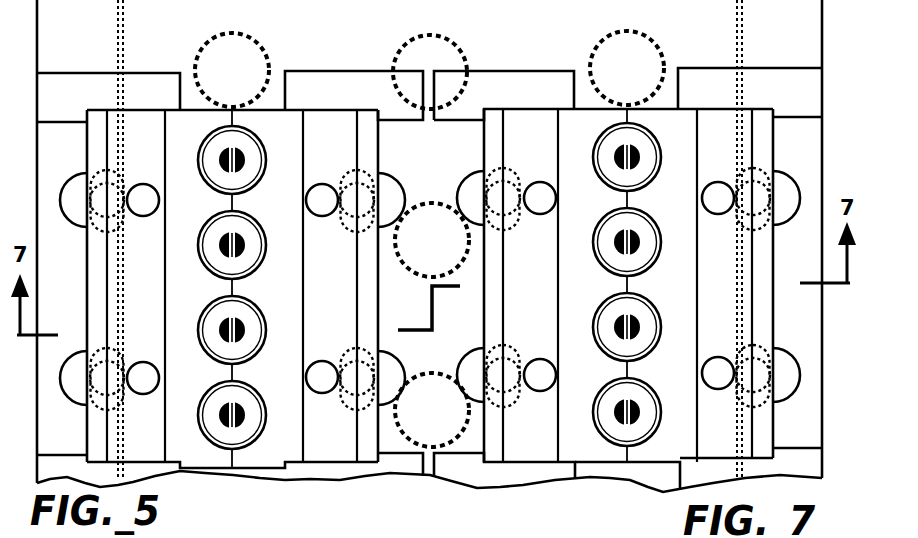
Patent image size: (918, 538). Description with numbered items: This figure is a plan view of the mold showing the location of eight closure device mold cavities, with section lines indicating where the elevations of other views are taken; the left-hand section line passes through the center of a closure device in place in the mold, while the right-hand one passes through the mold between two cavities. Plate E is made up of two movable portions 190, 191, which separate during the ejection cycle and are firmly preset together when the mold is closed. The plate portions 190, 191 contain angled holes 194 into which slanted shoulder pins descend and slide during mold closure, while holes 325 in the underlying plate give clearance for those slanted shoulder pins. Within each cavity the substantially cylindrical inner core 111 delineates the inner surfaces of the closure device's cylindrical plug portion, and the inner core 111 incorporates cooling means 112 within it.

In FIG. 5, the plate E movable portion 190 is at (159, 311).
In FIG. 5, the plate E movable portion 191 is at (346, 320).
In FIG. 5, the angled hole 194 is at (146, 185).
In FIG. 7, the angled hole 194 is at (715, 183).
In FIG. 5, the hole 325 is at (83, 225).
In FIG. 7, the hole 325 is at (777, 219).
In FIG. 5, the inner core 111 is at (245, 410).
In FIG. 5, the cooling means 112 is at (222, 406).